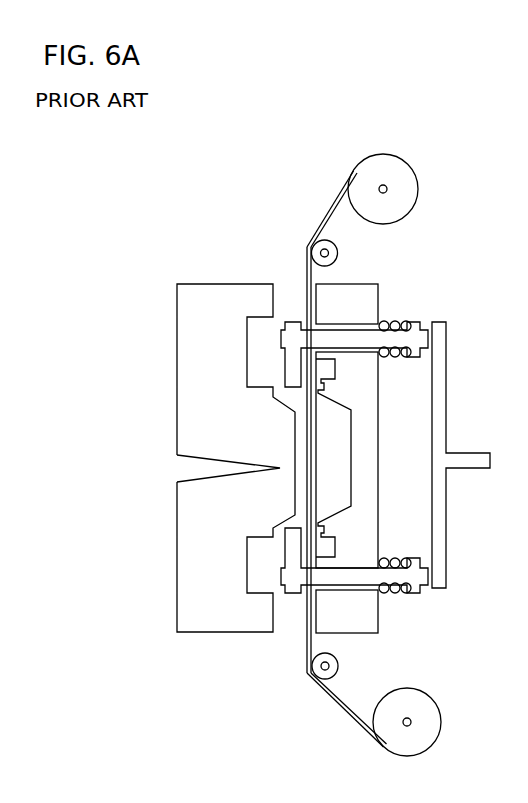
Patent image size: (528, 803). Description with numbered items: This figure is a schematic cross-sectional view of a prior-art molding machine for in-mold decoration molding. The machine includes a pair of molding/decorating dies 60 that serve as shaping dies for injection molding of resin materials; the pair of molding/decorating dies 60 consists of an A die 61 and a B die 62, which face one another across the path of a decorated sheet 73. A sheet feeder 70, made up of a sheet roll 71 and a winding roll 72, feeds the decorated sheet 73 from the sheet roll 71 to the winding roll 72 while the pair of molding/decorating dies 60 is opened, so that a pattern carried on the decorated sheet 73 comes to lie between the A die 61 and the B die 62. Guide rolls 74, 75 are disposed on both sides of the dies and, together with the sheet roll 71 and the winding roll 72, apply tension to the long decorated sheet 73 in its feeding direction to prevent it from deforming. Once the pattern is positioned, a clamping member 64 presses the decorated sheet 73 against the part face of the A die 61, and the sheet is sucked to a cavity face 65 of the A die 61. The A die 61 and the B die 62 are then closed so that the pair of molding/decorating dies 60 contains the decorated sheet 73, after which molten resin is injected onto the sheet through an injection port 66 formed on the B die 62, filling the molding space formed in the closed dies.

The pair of molding/decorating dies 60 is at (291, 298).
The A die 61 is at (370, 285).
The B die 62 is at (197, 284).
The clamping member 64 is at (292, 360).
The cavity face 65 is at (352, 412).
The injection port 66 is at (187, 467).
The sheet feeder 70 is at (334, 195).
The sheet roll 71 is at (403, 170).
The winding roll 72 is at (425, 710).
The decorated sheet 73 is at (305, 492).
The guide roll 74 is at (336, 253).
The guide roll 75 is at (337, 665).